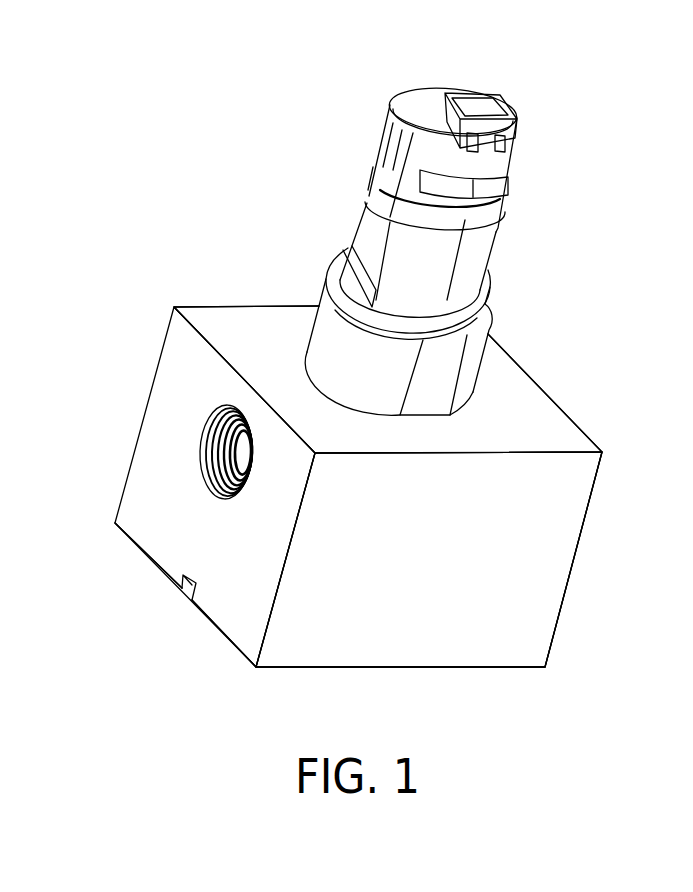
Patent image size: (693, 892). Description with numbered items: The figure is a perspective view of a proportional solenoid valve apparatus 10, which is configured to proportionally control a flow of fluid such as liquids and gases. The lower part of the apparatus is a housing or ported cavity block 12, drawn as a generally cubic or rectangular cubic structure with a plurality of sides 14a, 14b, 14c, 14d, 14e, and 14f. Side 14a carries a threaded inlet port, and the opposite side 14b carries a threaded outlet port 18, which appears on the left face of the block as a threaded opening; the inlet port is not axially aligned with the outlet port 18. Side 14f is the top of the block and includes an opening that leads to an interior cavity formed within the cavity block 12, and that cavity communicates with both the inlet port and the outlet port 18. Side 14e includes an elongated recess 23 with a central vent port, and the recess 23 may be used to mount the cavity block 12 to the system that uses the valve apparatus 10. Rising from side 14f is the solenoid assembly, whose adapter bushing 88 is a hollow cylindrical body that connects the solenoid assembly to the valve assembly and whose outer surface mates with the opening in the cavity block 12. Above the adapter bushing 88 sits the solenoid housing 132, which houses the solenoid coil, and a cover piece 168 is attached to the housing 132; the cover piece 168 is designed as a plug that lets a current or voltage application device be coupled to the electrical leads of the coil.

The proportional solenoid valve apparatus 10 is at (412, 245).
The ported cavity block 12 is at (360, 524).
The side 14a is at (573, 560).
The side 14b is at (176, 539).
The side 14c is at (143, 413).
The side 14d is at (450, 572).
The side 14e is at (400, 668).
The side 14f is at (545, 413).
The threaded outlet port 18 is at (203, 458).
The elongated recess 23 is at (185, 593).
The adapter bushing 88 is at (472, 372).
The solenoid housing 132 is at (472, 272).
The cover piece 168 is at (512, 138).